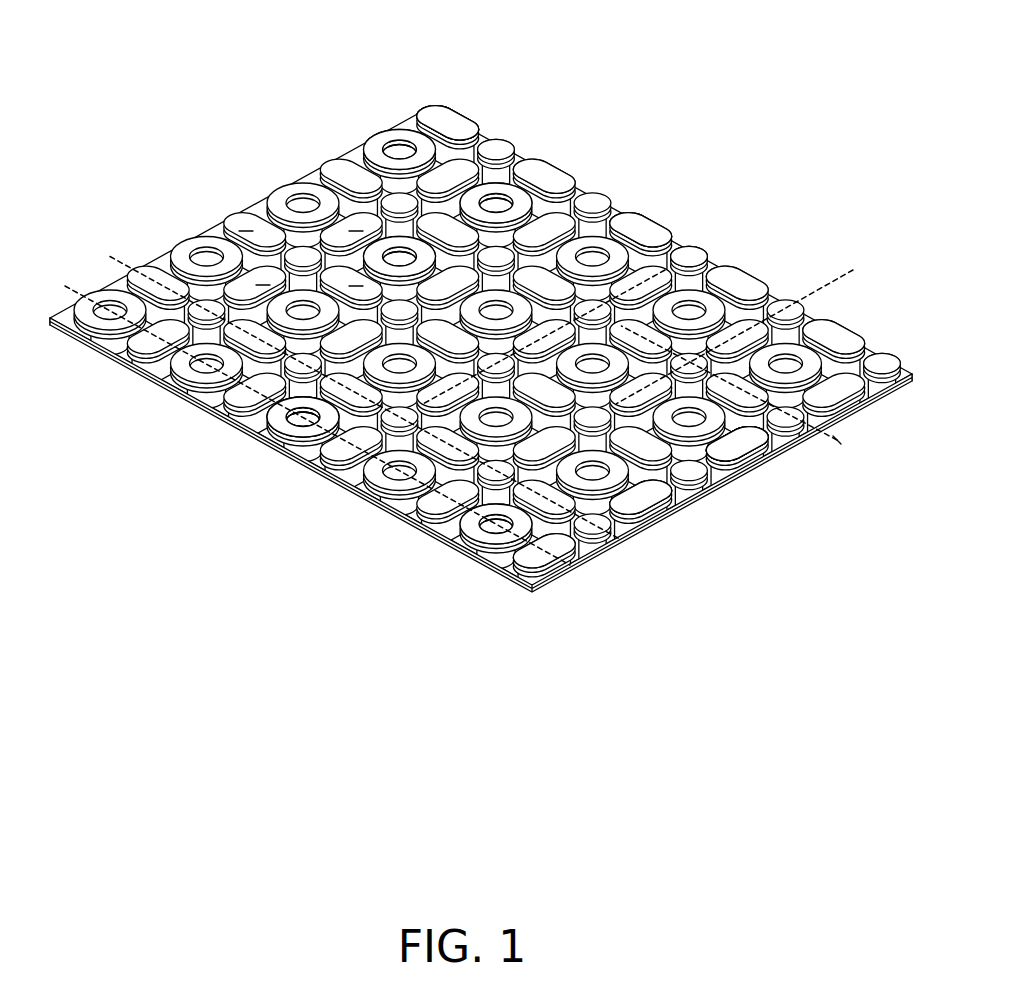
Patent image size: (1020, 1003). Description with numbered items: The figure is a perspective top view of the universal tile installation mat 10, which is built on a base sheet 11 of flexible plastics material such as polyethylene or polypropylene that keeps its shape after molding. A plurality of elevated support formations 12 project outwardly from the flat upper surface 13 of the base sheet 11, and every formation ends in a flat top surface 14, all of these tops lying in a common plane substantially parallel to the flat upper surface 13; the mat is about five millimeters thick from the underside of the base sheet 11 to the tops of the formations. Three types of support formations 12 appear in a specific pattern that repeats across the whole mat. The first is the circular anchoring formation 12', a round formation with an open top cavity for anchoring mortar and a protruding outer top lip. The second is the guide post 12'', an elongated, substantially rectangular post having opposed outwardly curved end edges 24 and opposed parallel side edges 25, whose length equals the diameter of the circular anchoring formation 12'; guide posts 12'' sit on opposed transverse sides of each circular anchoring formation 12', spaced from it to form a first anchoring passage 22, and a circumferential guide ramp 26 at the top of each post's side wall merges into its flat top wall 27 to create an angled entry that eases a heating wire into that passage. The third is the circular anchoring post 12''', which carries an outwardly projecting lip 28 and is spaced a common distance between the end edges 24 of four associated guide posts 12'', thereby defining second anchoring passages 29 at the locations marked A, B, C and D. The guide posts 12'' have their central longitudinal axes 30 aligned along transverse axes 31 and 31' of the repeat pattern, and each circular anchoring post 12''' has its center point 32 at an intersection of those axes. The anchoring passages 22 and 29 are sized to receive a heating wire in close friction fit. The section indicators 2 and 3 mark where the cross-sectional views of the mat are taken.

The universal tile installation mat 10 is at (481, 329).
The base sheet 11 is at (220, 398).
The elevated support formations 12 is at (681, 220).
The circular anchoring formation 12' is at (501, 360).
The guide post 12'' is at (470, 103).
The circular anchoring post 12''' is at (527, 126).
The flat upper surface 13 is at (795, 437).
The flat top surface 14 is at (883, 356).
The first anchoring passage 22 is at (414, 136).
The outwardly curved end edges 24 is at (428, 108).
The parallel side edges 25 is at (452, 106).
The circumferential guide ramp 26 is at (641, 497).
The flat top wall 27 is at (660, 513).
The outwardly projecting lip 28 is at (624, 218).
The second anchoring passages 29 is at (303, 258).
The central longitudinal axis 30 is at (712, 252).
The transverse axis 31 is at (754, 321).
The transverse axis 31' is at (761, 385).
The center point 32 is at (739, 301).
The section line 2- 2 is at (92, 275).
The section line 3- 3 is at (139, 247).